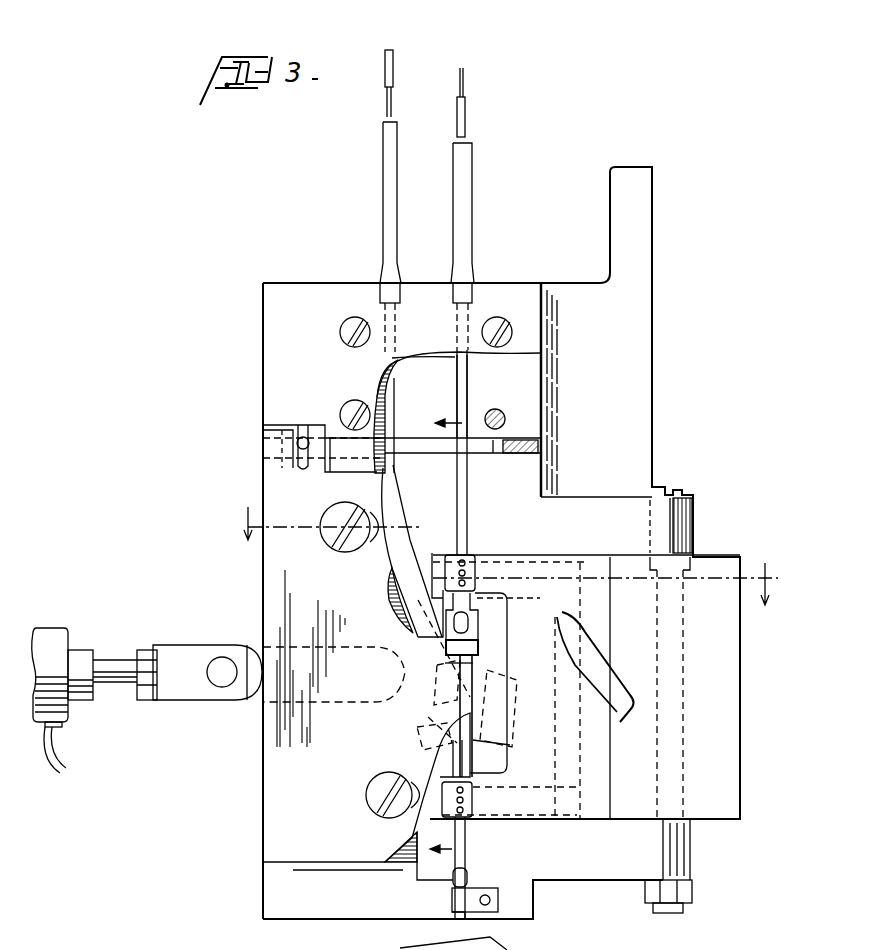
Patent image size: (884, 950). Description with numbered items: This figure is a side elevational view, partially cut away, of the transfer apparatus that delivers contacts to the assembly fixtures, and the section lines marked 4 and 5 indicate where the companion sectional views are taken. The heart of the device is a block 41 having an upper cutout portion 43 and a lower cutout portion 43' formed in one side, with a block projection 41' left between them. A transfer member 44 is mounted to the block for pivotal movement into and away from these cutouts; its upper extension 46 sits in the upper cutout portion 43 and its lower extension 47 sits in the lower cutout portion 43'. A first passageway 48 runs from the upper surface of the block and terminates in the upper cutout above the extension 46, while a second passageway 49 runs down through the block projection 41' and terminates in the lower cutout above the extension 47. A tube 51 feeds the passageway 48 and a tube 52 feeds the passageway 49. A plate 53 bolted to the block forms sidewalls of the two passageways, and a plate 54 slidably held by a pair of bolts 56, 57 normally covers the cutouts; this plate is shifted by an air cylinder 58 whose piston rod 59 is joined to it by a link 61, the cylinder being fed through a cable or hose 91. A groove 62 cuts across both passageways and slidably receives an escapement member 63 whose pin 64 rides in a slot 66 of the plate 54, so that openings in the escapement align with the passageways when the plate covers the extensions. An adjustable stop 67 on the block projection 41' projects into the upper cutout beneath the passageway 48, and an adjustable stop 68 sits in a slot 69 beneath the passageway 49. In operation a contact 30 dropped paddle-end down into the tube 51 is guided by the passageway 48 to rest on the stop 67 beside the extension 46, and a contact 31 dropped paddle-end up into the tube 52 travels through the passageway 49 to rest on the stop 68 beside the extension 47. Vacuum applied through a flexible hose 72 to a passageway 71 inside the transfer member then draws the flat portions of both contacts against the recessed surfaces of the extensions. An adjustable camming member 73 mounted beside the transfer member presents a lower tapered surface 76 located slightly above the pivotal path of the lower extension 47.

The contact 30 is at (467, 108).
The contact 31 is at (397, 50).
The block 41 is at (567, 390).
The block projection 41' is at (488, 685).
The upper cutout portion 43 is at (388, 595).
The lower cutout portion 43' is at (431, 787).
The transfer member 44 is at (587, 763).
The upper extension 46 is at (503, 562).
The lower extension 47 is at (490, 805).
The first passageway 48 is at (463, 373).
The second passageway 49 is at (387, 388).
The tube 51 is at (467, 176).
The tube 52 is at (386, 165).
The plate 53 is at (266, 303).
The plate 54 is at (267, 730).
The bolt 56 is at (327, 537).
The bolt 57 is at (366, 783).
The air cylinder 58 is at (45, 640).
The piston rod 59 is at (117, 677).
The link 61 is at (182, 653).
The groove 62 is at (520, 438).
The escapement member 63 is at (493, 453).
The pin 64 is at (305, 425).
The slot 66 is at (292, 467).
The adjustable stop 67 is at (513, 596).
The adjustable stop 68 is at (452, 887).
The slot 69 is at (467, 853).
The passageway 71 is at (575, 593).
The flexible hose 72 is at (610, 670).
The adjustable camming member 73 is at (408, 684).
The lower tapered surface 76 is at (483, 776).
The cable 91 is at (65, 757).
The section line 4- 4 is at (506, 556).
The section line 5- 5 is at (435, 643).